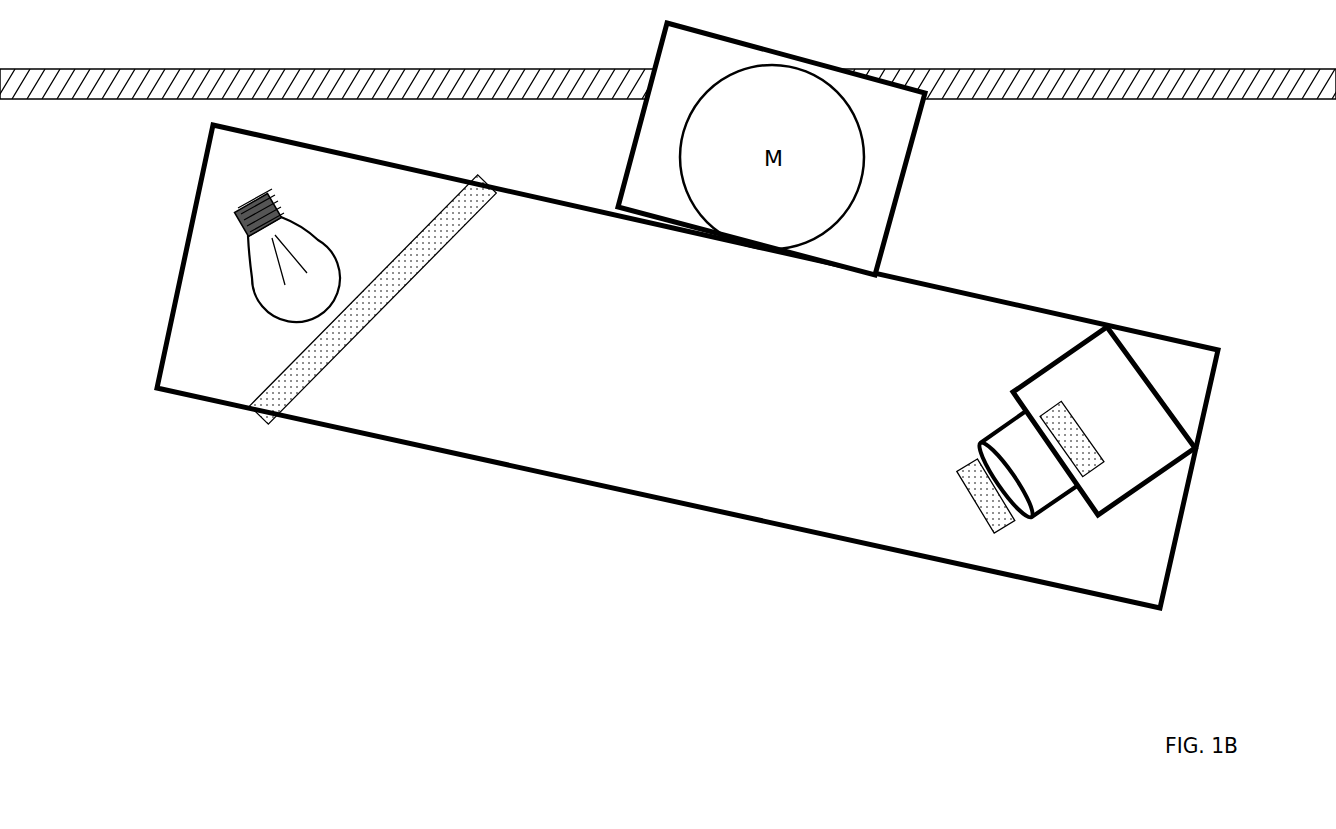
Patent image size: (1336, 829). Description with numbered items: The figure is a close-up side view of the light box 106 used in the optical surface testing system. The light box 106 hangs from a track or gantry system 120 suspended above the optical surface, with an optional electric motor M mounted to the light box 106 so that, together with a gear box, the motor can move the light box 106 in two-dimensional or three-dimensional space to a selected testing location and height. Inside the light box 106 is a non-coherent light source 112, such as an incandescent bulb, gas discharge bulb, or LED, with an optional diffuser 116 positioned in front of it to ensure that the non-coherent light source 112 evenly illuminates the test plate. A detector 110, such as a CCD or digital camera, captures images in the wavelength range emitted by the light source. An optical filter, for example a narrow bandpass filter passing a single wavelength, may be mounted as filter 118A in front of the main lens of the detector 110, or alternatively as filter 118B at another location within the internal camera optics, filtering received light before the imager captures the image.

The track or gantry system 120 is at (668, 72).
The light box 106 is at (687, 366).
The non-coherent light source 112 is at (287, 252).
The diffuser 116 is at (373, 299).
The detector 110 is at (1084, 424).
The filter 118A is at (962, 496).
The filter 118B is at (1082, 429).